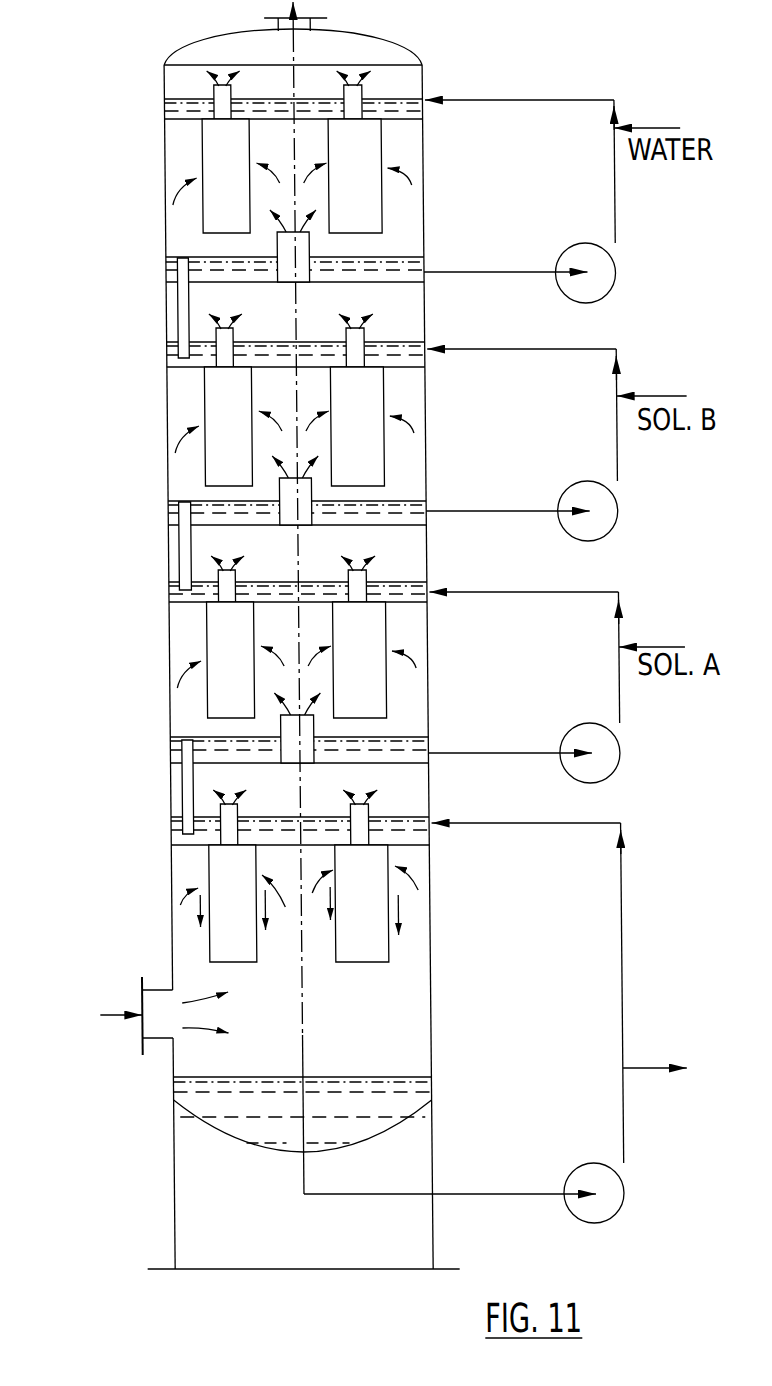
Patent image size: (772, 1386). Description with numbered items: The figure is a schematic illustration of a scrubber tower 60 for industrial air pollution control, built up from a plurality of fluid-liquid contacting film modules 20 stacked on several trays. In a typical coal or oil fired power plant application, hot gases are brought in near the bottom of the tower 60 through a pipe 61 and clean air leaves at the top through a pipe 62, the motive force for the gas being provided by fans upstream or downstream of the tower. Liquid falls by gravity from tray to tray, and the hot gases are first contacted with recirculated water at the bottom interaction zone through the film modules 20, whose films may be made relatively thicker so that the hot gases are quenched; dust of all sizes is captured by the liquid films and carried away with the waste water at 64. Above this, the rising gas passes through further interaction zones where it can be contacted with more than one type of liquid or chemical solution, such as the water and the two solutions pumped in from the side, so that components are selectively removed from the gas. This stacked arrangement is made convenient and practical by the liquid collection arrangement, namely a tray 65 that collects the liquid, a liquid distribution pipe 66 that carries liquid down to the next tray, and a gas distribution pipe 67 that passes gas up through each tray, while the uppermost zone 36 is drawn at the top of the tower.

The film module 20 is at (380, 152).
The top tray 36 is at (195, 93).
The tower 60 is at (161, 667).
The pipe 61 is at (146, 990).
The pipe 62 is at (327, 18).
The waste water 64 is at (635, 1069).
The tray 65 is at (192, 155).
The liquid distribution pipe 66 is at (175, 298).
The gas distribution pipe 67 is at (274, 486).